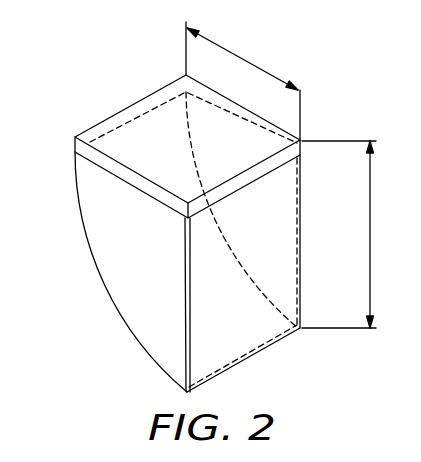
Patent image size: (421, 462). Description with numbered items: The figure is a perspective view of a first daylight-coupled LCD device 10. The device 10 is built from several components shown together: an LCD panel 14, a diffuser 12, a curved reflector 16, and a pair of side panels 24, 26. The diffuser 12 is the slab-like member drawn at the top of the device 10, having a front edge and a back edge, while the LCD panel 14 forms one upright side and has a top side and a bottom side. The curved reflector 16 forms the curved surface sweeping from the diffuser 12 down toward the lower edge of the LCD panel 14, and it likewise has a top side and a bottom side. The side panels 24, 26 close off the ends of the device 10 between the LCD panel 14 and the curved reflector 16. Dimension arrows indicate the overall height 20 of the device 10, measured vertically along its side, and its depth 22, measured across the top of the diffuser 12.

The daylight-coupled LCD device 10 is at (222, 205).
The diffuser 12 is at (88, 147).
The LCD panel 14 is at (186, 312).
The curved reflector 16 is at (107, 297).
The height 20 is at (371, 212).
The depth 22 is at (251, 64).
The side panel 24 is at (157, 352).
The side panel 26 is at (282, 252).